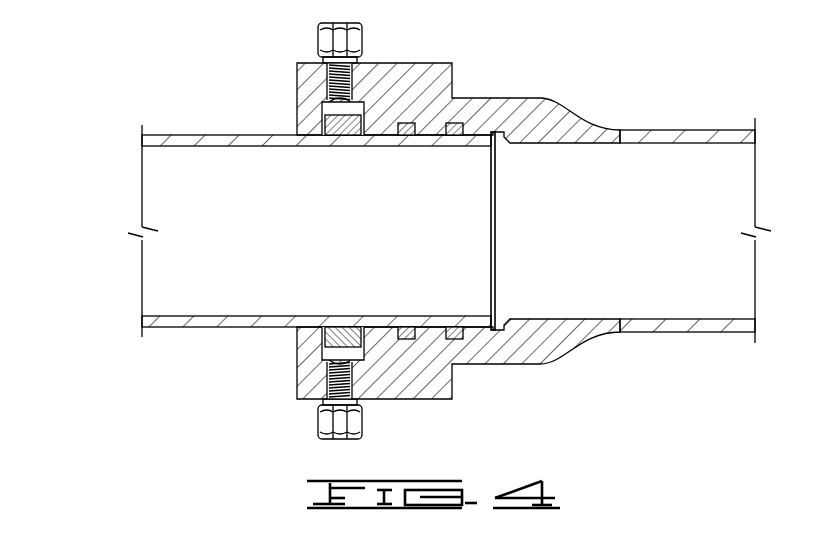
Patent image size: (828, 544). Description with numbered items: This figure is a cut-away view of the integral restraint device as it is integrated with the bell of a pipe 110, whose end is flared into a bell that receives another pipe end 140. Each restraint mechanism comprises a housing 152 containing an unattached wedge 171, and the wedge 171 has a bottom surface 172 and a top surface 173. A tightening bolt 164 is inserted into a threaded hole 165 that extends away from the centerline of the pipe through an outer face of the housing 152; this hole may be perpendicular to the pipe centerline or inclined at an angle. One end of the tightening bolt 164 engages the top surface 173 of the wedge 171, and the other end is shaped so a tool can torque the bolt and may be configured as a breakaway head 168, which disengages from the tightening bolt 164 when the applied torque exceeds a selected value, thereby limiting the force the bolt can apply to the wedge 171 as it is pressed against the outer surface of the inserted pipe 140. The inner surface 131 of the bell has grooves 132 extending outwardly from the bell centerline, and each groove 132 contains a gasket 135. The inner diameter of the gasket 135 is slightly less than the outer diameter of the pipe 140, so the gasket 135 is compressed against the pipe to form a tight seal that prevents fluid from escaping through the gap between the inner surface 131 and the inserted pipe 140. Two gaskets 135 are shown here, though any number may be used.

The pipe 110 is at (683, 333).
The inner surface of the bell 131 is at (422, 137).
The groove 132 is at (403, 360).
The gasket 135 is at (454, 327).
The pipe end 140 is at (193, 133).
The housing 152 is at (445, 84).
The tightening bolt 164 is at (355, 68).
The threaded hole 165 is at (333, 372).
The breakaway head 168 is at (320, 34).
The wedge 171 is at (343, 140).
The bottom surface of the wedge 172 is at (336, 328).
The top surface of the wedge 173 is at (336, 120).